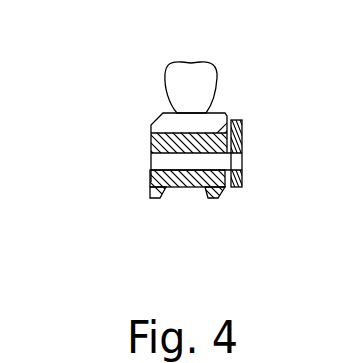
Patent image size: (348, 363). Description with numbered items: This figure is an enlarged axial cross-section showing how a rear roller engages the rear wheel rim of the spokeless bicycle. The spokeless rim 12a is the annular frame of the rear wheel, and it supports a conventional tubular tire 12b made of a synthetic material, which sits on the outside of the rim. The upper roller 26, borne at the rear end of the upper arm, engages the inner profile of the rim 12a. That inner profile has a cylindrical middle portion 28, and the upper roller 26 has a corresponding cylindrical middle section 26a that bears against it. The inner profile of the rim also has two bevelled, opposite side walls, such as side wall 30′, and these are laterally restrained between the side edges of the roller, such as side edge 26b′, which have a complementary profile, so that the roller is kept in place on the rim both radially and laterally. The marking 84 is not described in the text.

The spokeless rim 12a is at (211, 117).
The tubular tire 12b is at (200, 61).
The upper roller 26 is at (150, 172).
The cylindrical middle section 26a is at (198, 191).
The side edge 26b′ is at (150, 193).
The cylindrical middle portion 28 is at (212, 155).
The bevelled side wall 30′ is at (152, 140).
The sheet marking 84 is at (335, 312).